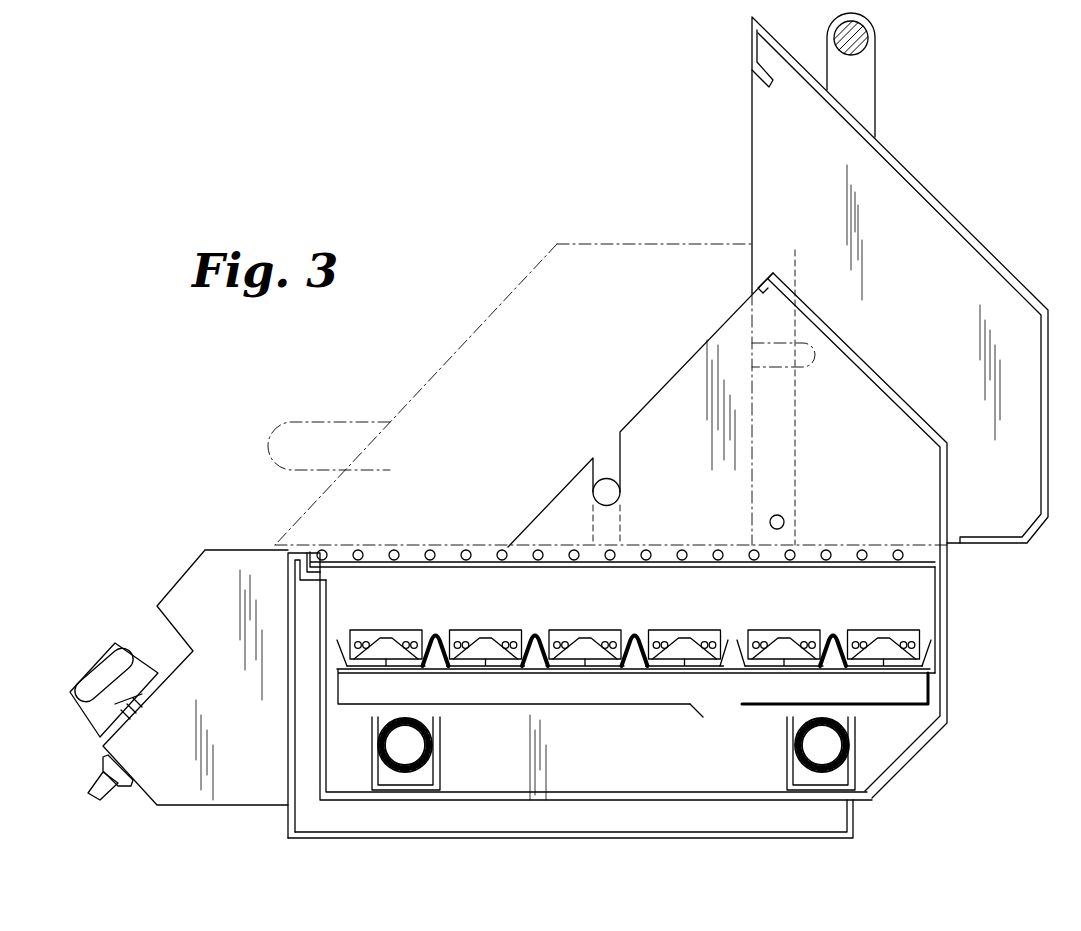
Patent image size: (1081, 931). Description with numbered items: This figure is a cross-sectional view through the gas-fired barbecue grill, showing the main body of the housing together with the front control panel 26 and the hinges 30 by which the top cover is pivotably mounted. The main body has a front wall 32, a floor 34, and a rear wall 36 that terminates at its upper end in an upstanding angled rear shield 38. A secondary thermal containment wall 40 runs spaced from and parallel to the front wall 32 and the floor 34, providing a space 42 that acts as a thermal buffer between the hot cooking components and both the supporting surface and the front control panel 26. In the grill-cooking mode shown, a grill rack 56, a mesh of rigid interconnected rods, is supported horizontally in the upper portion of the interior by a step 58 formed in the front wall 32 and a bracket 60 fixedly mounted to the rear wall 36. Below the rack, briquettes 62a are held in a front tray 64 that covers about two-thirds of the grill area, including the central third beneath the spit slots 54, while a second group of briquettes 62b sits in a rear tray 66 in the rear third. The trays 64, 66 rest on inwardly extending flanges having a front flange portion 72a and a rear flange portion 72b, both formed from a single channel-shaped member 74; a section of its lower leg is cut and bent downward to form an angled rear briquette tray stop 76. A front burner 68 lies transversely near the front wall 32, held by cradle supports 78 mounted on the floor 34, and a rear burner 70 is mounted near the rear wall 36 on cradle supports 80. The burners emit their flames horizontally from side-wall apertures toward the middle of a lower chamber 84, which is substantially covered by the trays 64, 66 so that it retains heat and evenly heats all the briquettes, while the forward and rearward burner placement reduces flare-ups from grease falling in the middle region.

The front control panel 26 is at (187, 572).
The hinges 30 is at (784, 522).
The front wall 32 is at (330, 762).
The floor 34 is at (680, 796).
The rear wall 36 is at (950, 652).
The rear shield 38 is at (860, 354).
The secondary thermal containment wall 40 is at (312, 840).
The space 42 is at (524, 820).
The spit slots 54 is at (616, 447).
The grill rack 56 is at (430, 551).
The step 58 is at (316, 566).
The bracket 60 is at (938, 571).
The briquettes 62a is at (488, 633).
The briquettes 62b is at (784, 632).
The front tray 64 is at (637, 628).
The rear tray 66 is at (838, 628).
The front burner 68 is at (432, 742).
The rear burner 70 is at (853, 748).
The front flange portion 72a is at (520, 673).
The rear flange portion 72b is at (868, 675).
The channel-shaped member 74 is at (627, 690).
The rear briquette tray stop 76 is at (696, 718).
The cradle supports 78 is at (442, 778).
The cradle supports 80 is at (786, 772).
The lower chamber 84 is at (578, 758).